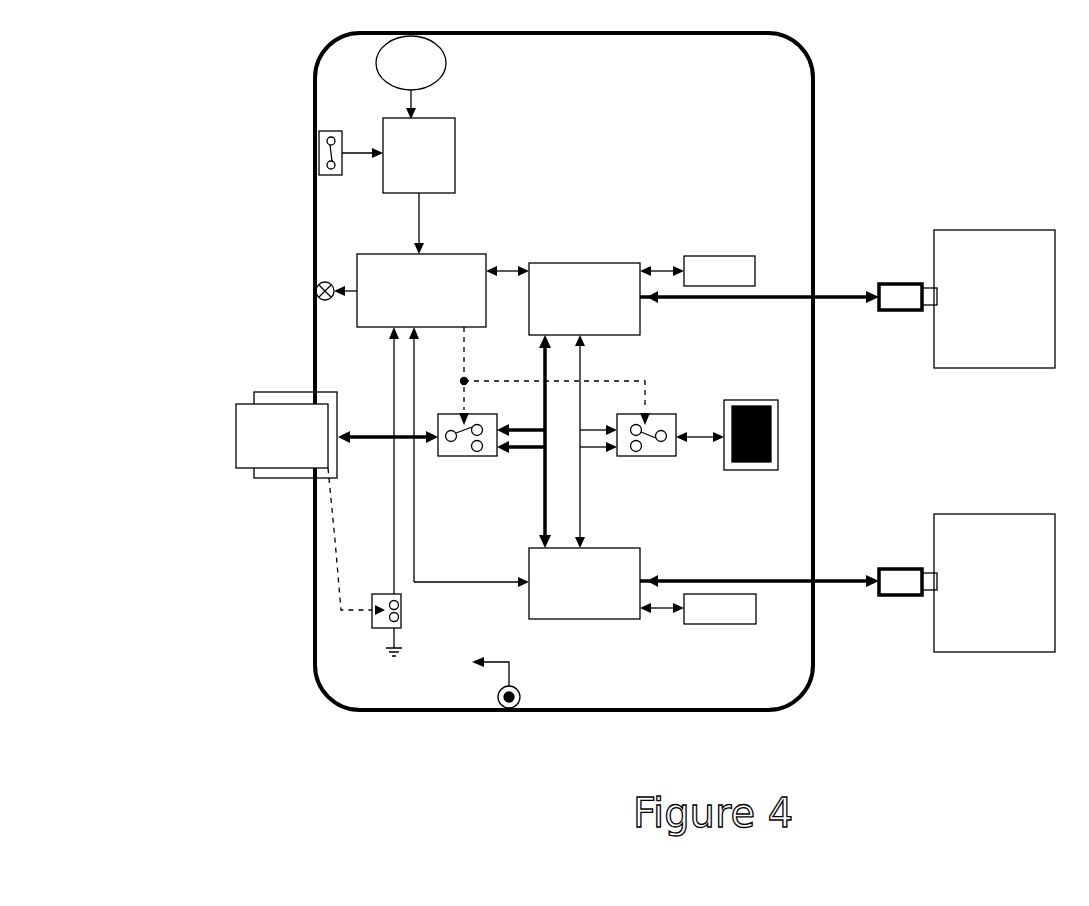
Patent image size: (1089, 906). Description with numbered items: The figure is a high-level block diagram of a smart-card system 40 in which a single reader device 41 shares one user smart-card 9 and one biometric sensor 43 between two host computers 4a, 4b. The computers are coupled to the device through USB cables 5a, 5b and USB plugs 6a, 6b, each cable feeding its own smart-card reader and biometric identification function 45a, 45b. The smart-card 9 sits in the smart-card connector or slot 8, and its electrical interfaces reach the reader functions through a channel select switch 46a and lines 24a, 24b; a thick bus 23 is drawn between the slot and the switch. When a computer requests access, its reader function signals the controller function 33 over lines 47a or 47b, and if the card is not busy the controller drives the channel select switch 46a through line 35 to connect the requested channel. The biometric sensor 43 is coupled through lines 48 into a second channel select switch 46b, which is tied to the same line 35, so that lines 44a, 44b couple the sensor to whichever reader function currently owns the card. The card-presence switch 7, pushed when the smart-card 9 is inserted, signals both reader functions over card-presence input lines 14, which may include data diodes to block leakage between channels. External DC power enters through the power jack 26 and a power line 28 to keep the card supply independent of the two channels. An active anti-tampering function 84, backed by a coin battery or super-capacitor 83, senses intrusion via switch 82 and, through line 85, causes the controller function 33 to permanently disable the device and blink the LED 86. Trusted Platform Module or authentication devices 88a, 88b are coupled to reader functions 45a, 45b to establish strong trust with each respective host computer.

The smart-card system 40 is at (204, 114).
The device 41 is at (813, 428).
The switch 82 is at (326, 131).
The coin battery or super-capacitor 83 is at (446, 63).
The anti-tampering function 84 is at (455, 155).
The line 85 is at (421, 226).
The controller function 33 is at (360, 254).
The LED 86 is at (316, 291).
The lines 47a is at (507, 270).
The lines 47b is at (465, 582).
The smart-card reader and biometric identification function 45a is at (582, 263).
The smart-card reader and biometric identification function 45b is at (585, 619).
The Trusted Platform Module or authentication device 88a is at (704, 256).
The Trusted Platform Module or authentication device 88b is at (702, 624).
The USB cable 5a is at (845, 297).
The USB cable 5b is at (845, 581).
The USB plug 6a is at (900, 284).
The USB plug 6b is at (900, 569).
The computer 4a is at (978, 230).
The computer 4b is at (978, 514).
The lines 24a is at (541, 371).
The lines 24b is at (545, 482).
The lines 44a is at (582, 360).
The lines 44b is at (582, 524).
The line 35 is at (644, 399).
The channel select switch 46a is at (455, 456).
The channel select switch 46b is at (662, 456).
The lines 48 is at (699, 432).
The biometric sensor 43 is at (750, 470).
The peripheral data bus 23 is at (369, 434).
The smart-card connector or slot 8 is at (289, 392).
The smart-card 9 is at (236, 430).
The card-presence input lines 14 is at (394, 522).
The card-presence switch 7 is at (405, 612).
The power jack 26 is at (505, 710).
The power line 28 is at (492, 662).